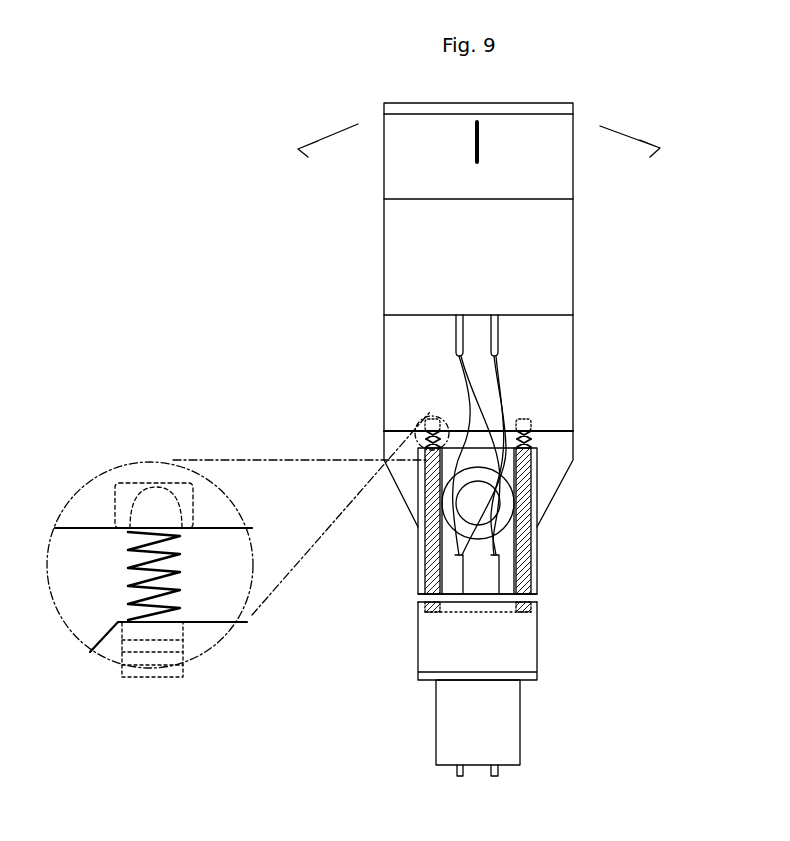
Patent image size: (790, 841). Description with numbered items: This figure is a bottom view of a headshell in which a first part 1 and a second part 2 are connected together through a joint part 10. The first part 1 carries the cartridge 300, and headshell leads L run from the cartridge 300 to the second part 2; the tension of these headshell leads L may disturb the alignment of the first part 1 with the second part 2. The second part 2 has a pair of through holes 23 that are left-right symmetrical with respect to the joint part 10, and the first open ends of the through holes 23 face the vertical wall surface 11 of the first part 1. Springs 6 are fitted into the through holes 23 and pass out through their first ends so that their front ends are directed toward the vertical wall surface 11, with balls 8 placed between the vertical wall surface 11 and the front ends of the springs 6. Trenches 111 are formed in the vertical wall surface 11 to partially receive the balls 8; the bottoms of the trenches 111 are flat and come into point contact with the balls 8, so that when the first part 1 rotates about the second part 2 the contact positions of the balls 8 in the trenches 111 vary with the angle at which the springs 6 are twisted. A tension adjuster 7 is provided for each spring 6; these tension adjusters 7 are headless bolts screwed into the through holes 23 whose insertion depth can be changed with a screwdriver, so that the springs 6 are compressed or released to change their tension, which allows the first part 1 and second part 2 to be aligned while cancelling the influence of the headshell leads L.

The cartridge 300 is at (535, 253).
The first part 1 is at (384, 344).
The headshell leads L is at (503, 402).
The vertical wall surface 11 is at (383, 432).
The balls 8 is at (531, 431).
The trenches 111 is at (120, 498).
The springs 6 is at (528, 441).
The joint part 10 is at (480, 512).
The tension adjusters 7 is at (537, 590).
The through holes 23 is at (522, 615).
The second part 2 is at (418, 655).